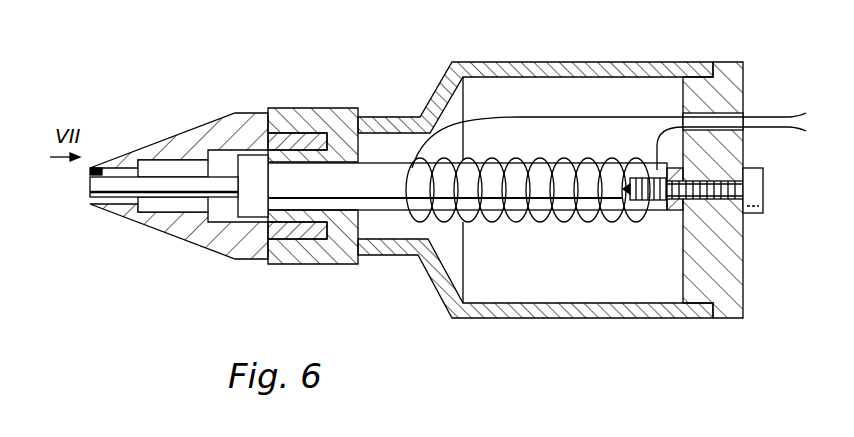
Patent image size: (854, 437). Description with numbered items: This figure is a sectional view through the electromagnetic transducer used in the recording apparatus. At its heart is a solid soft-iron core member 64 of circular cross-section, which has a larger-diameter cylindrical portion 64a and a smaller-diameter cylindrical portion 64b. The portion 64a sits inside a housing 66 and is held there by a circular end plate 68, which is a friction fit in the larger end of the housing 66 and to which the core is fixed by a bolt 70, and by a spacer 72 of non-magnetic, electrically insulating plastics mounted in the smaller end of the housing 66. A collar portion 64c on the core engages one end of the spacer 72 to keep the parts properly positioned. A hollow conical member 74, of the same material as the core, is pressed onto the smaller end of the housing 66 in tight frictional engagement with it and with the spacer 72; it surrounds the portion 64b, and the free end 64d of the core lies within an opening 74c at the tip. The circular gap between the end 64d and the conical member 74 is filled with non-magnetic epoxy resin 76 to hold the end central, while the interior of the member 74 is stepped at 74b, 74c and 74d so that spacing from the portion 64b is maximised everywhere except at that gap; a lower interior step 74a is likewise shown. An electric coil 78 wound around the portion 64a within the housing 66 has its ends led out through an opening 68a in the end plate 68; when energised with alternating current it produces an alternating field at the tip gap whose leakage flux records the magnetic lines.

The core member 64 is at (343, 193).
The cylindrical portion 64a is at (390, 197).
The cylindrical portion 64b is at (165, 192).
The collar portion 64c is at (262, 178).
The free end 64d is at (88, 181).
The housing 66 is at (514, 62).
The end plate 68 is at (732, 265).
The opening 68a is at (733, 110).
The bolt 70 is at (758, 175).
The spacer 72 is at (240, 258).
The conical member 74 is at (160, 143).
The nozzle lower passage 74a is at (90, 207).
The step 74b is at (113, 163).
The opening 74c is at (233, 152).
The step 74d is at (242, 147).
The epoxy resin 76 is at (88, 171).
The electric coil 78 is at (540, 158).